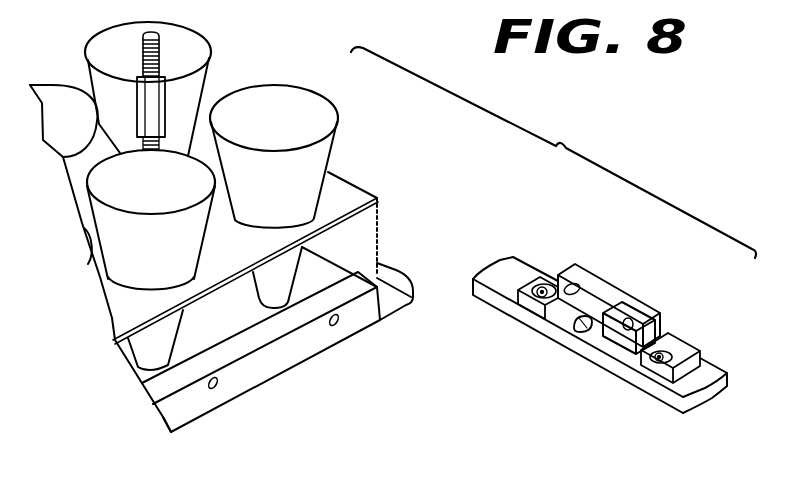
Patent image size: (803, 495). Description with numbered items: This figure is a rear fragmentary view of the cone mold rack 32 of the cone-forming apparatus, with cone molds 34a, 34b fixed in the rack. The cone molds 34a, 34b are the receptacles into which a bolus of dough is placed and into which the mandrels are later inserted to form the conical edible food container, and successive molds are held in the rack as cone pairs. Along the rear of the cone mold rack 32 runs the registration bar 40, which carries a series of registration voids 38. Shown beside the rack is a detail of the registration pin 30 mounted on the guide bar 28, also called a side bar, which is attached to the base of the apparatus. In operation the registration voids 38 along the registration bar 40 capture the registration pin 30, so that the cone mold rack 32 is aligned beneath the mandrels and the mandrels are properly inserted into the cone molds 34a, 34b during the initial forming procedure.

The guide bar 28 is at (658, 399).
The registration pin 30 is at (574, 327).
The cone mold rack 32 is at (350, 199).
The cone mold 34a is at (212, 227).
The cone mold 34b is at (252, 30).
The registration voids 38 is at (331, 326).
The registration bar 40 is at (178, 406).